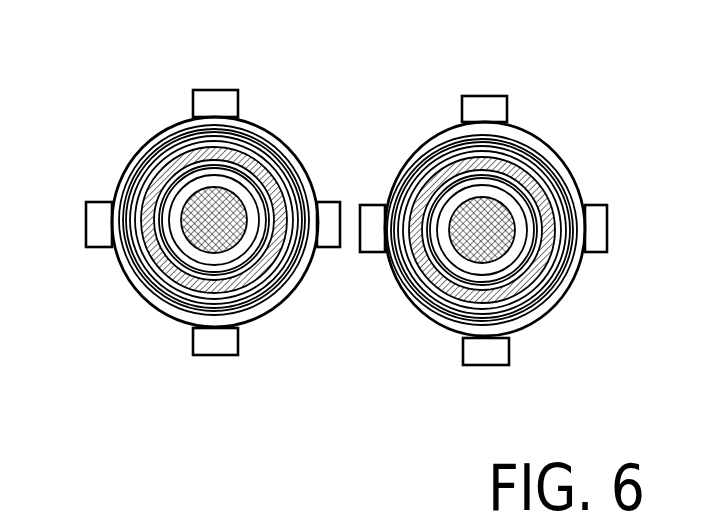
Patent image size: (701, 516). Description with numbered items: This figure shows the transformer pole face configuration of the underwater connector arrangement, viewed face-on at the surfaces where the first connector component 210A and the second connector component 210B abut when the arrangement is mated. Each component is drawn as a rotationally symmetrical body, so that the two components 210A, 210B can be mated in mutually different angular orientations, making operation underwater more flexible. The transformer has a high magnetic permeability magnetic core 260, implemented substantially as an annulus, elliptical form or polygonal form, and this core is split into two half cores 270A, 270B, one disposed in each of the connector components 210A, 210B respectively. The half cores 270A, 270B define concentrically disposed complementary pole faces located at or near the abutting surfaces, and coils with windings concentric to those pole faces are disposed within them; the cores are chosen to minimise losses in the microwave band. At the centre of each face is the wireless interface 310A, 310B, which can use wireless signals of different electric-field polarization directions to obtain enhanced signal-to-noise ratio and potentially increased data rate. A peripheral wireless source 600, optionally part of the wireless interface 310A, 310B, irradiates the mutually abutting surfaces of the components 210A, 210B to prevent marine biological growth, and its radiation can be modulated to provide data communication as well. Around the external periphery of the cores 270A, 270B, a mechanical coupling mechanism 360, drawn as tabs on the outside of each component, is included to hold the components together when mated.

The first connector component 210A is at (117, 173).
The second connector component 210B is at (583, 188).
The magnetic core 260 is at (160, 285).
The first half core 270A is at (148, 140).
The second half core 270B is at (513, 155).
The first wireless interface 310A is at (212, 208).
The second wireless interface 310B is at (472, 233).
The mechanical coupling mechanism 360 is at (205, 105).
The peripheral wireless source 600 is at (255, 132).